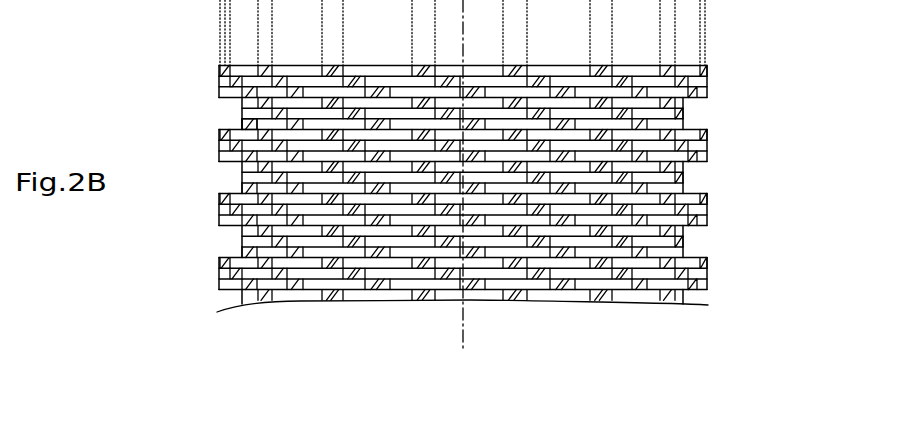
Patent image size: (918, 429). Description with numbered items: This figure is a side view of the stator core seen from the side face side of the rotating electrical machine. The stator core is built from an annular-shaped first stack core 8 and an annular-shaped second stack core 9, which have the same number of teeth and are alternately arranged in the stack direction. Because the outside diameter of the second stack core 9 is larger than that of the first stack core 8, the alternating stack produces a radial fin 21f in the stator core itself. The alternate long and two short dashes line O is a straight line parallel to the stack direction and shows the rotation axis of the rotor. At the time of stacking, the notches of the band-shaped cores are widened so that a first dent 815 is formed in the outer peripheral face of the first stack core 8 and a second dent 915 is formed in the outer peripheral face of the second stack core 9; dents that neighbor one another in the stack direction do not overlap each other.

The second dent 915 is at (662, 77).
The second stack core 9 is at (709, 68).
The first stack core 8 is at (685, 102).
The radial fin 21f is at (722, 157).
The first dent 815 is at (247, 122).
The alternate long and two short dashes line O is at (462, 192).